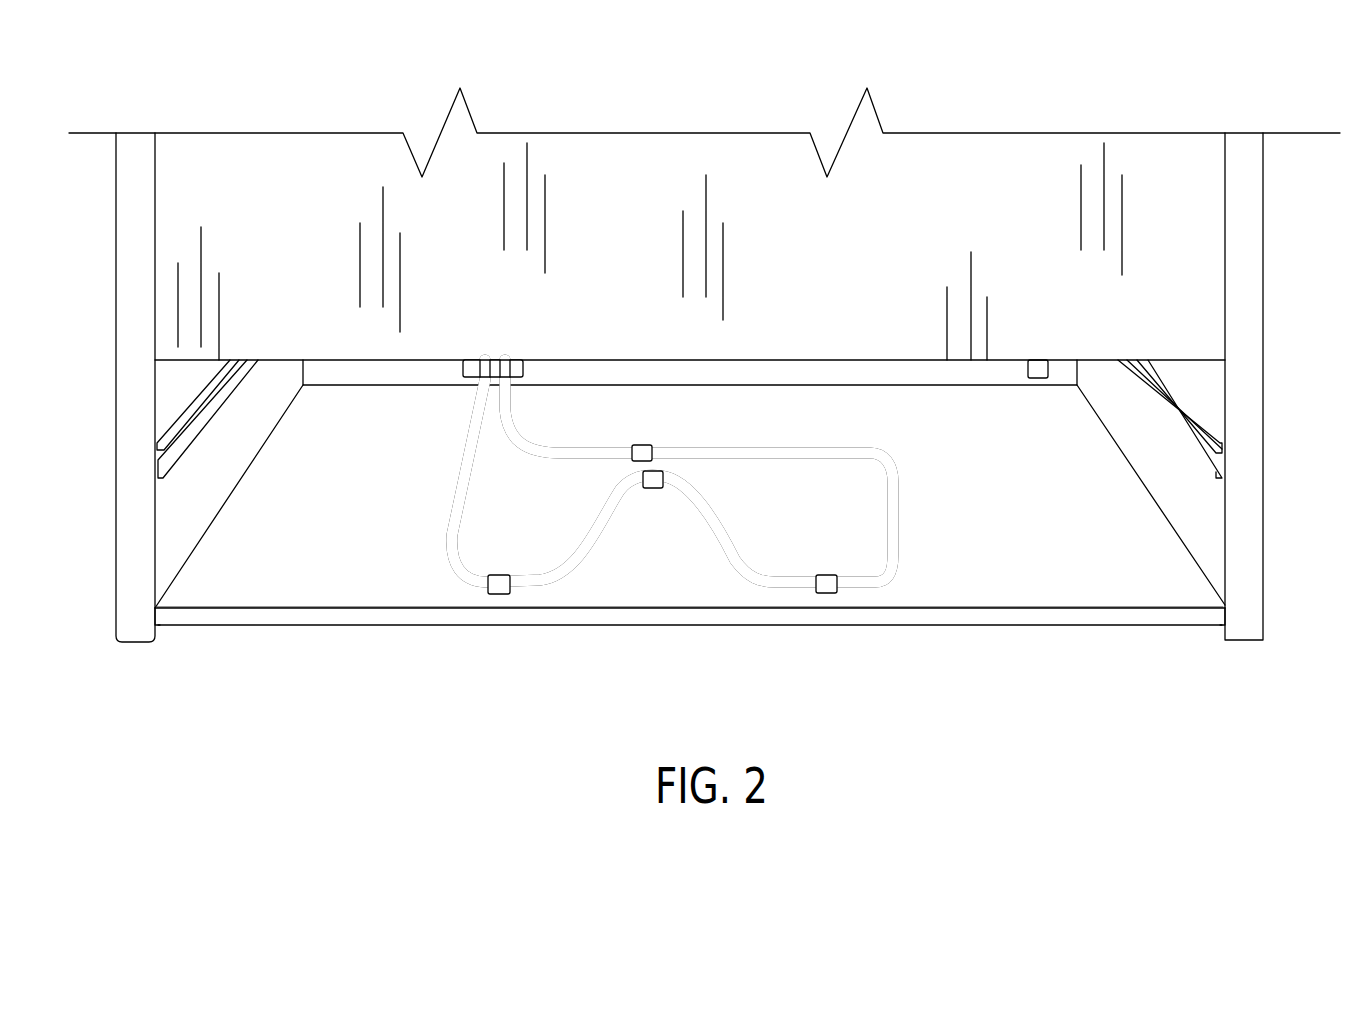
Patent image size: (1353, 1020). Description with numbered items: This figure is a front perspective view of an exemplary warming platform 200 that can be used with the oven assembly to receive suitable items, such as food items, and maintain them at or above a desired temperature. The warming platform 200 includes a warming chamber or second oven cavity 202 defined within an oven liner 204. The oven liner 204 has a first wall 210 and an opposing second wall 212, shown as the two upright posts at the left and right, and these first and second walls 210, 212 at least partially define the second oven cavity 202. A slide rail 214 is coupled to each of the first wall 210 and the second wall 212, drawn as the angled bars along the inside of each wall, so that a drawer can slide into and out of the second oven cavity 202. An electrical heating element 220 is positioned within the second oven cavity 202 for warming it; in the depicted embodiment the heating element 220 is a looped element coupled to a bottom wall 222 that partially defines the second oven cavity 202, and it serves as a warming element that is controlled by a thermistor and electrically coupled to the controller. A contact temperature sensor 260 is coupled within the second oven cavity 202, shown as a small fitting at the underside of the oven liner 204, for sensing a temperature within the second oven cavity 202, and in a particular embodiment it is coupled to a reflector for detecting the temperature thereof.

The warming platform 200 is at (1005, 652).
The second oven cavity 202 is at (672, 520).
The oven liner 204 is at (1027, 310).
The first wall 210 is at (177, 392).
The second wall 212 is at (1210, 395).
The slide rail 214 is at (167, 460).
The electrical heating element 220 is at (790, 588).
The bottom wall 222 is at (1043, 541).
The contact temperature sensor 260 is at (1042, 360).